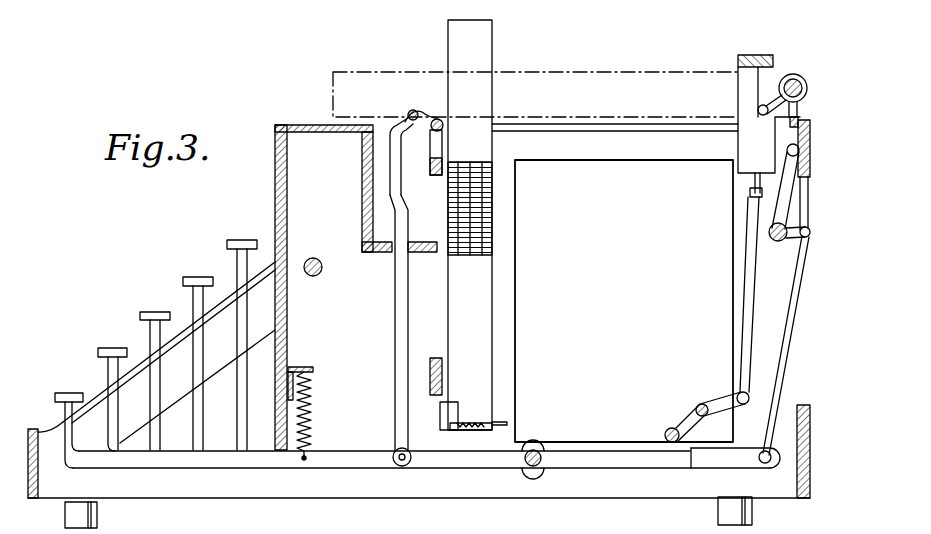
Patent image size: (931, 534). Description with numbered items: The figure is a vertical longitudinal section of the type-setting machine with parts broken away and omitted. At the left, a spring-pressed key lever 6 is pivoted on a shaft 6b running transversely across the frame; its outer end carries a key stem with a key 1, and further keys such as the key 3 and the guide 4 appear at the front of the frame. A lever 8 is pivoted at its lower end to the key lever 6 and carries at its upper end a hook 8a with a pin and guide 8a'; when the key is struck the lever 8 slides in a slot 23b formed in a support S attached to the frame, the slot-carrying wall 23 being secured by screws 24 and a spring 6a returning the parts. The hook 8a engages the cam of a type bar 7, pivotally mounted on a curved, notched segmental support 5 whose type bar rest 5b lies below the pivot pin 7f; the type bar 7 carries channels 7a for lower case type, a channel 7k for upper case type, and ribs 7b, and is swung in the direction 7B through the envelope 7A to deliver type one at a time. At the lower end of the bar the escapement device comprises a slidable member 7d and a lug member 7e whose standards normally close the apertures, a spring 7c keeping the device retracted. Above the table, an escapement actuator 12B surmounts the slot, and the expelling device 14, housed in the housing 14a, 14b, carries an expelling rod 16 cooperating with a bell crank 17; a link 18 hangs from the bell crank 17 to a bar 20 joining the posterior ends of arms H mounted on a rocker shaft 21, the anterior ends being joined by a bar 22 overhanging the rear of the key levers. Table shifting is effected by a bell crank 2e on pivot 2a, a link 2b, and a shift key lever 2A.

The key 1 is at (185, 280).
The key 3 is at (68, 393).
The key guide hook 4 is at (42, 430).
The segmental support 5 is at (430, 166).
The type bar rest 5b is at (432, 358).
The key lever 6 is at (268, 460).
The spring 6a is at (312, 407).
The shaft 6b is at (541, 463).
The type bar 7 is at (482, 62).
The carriage envelope 7A is at (556, 73).
The direction of movement 7B is at (553, 414).
The channels 7a is at (483, 208).
The roller rib 7b is at (493, 228).
The spring 7c is at (470, 431).
The slidable member 7d is at (507, 423).
The lug member 7e is at (442, 418).
The pivot pin 7f is at (435, 116).
The channel 7k is at (455, 222).
The lever 8 is at (396, 313).
The hook 8a is at (404, 104).
The pin and guide 8a' is at (399, 80).
The escapement actuator 12B is at (757, 56).
The expelling device 14 is at (793, 74).
The housing 14a is at (786, 118).
The housing 14b is at (782, 135).
The expelling rod 16 is at (757, 108).
The bell crank 17 is at (752, 190).
The link 18 is at (746, 258).
The bar 20 is at (738, 393).
The rocker shaft 21 is at (698, 404).
The bar 22 is at (668, 429).
The box 23 is at (362, 182).
The slot 23b is at (390, 250).
The screw 24 is at (318, 260).
The shift key lever 2A is at (722, 456).
The pivot 2a is at (786, 152).
The link 2b is at (795, 300).
The bell crank 2e is at (780, 210).
The arms H is at (722, 408).
The support S is at (362, 204).